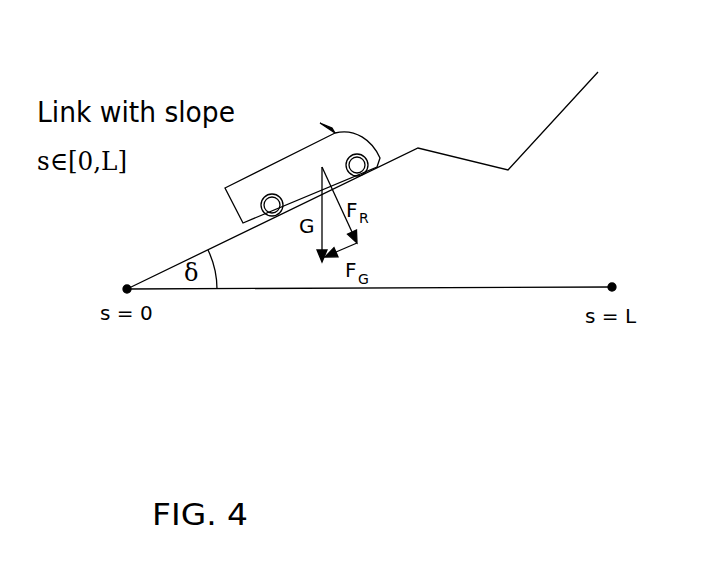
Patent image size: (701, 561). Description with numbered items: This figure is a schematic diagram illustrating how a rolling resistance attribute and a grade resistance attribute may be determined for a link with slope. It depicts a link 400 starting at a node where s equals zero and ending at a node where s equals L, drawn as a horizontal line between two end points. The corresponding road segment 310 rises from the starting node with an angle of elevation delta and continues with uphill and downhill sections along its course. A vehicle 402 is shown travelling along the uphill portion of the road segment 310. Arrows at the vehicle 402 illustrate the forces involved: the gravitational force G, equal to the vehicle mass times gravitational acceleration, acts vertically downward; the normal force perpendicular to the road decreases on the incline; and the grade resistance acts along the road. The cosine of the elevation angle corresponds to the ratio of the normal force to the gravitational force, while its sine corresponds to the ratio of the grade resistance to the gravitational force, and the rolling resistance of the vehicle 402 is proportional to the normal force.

The vehicle 402 is at (348, 132).
The road segment 310 is at (403, 155).
The link 400 is at (418, 323).